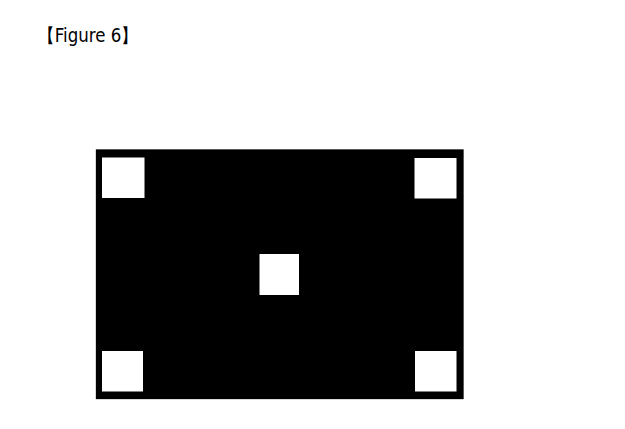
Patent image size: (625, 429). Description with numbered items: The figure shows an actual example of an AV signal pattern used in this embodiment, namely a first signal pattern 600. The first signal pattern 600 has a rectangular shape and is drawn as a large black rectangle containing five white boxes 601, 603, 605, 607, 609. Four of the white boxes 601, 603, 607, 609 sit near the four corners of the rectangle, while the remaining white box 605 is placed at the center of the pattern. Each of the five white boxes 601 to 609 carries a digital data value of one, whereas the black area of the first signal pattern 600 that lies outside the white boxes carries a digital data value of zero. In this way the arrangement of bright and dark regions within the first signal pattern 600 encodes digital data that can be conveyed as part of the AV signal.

The first signal pattern 600 is at (68, 96).
The white box 601 is at (99, 170).
The white box 603 is at (445, 170).
The white box 605 is at (263, 142).
The white box 607 is at (99, 364).
The white box 609 is at (444, 364).